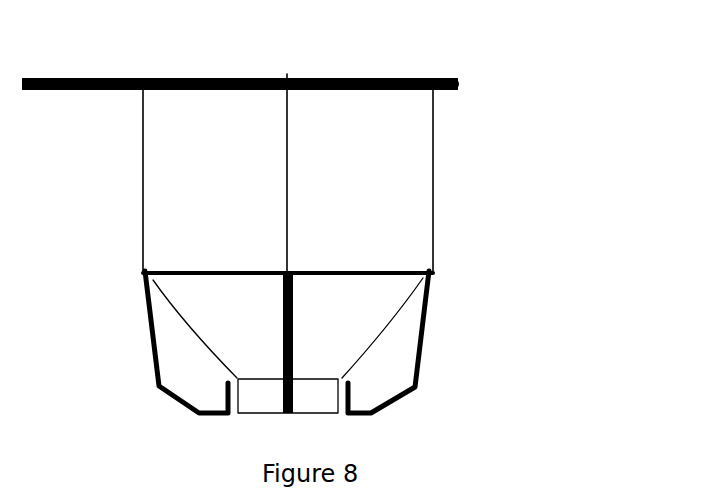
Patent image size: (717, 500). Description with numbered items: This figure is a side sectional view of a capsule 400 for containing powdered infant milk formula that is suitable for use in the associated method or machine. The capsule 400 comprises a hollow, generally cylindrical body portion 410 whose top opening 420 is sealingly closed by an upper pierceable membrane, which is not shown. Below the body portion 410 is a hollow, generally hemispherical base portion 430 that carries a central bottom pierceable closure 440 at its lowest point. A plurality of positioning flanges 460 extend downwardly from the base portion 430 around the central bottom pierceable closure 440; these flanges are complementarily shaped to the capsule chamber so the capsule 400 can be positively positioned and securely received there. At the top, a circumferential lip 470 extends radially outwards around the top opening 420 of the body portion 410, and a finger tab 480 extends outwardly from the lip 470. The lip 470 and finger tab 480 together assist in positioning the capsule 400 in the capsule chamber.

The capsule 400 is at (566, 89).
The body portion 410 is at (235, 190).
The top opening 420 is at (354, 74).
The base portion 430 is at (248, 322).
The central bottom pierceable closure 440 is at (272, 408).
The positioning flanges 460 is at (160, 355).
The circumferential lip 470 is at (456, 75).
The finger tab 480 is at (60, 91).